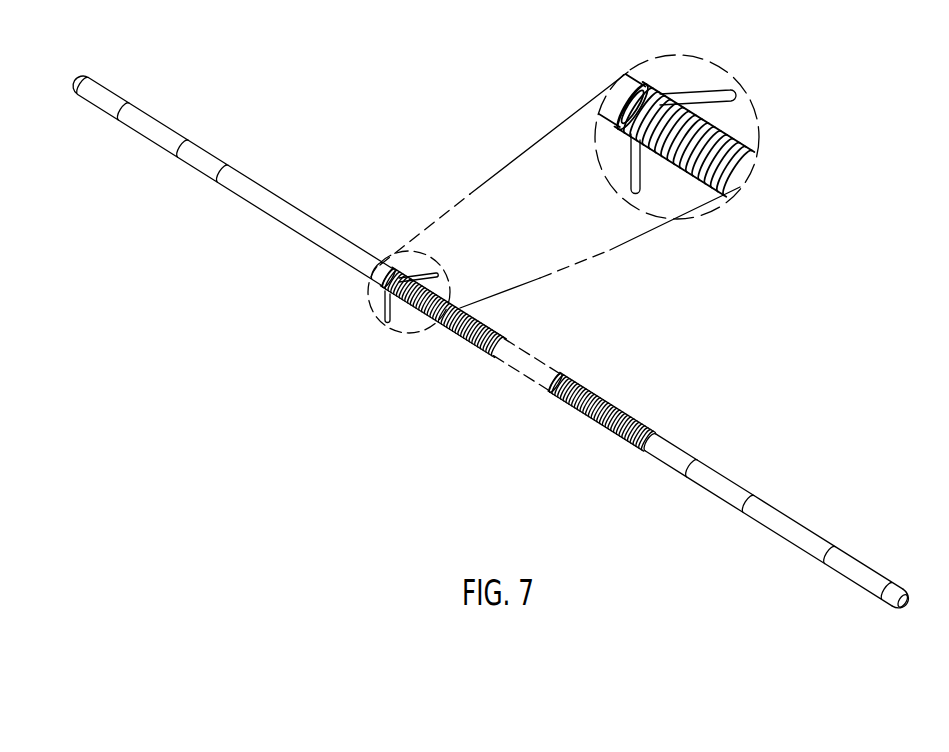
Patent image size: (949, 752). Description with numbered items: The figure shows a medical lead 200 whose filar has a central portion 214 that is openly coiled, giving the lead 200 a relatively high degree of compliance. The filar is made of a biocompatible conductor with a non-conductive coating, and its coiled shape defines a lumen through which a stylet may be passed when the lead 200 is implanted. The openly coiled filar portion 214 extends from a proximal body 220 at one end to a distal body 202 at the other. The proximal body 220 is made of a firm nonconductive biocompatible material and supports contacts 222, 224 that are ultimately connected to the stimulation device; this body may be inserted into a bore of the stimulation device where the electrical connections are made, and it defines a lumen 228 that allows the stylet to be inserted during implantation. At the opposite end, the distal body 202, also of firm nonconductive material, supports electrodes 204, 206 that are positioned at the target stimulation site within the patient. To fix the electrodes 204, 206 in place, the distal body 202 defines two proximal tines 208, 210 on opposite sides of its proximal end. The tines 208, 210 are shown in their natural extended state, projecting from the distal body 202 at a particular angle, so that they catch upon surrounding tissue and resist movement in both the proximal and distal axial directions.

The medical lead 200 is at (331, 380).
The distal body 202 is at (160, 121).
The electrode 204 is at (107, 95).
The electrode 206 is at (203, 154).
The proximal tine 208 is at (438, 276).
The proximal tine 210 is at (386, 318).
The openly coiled filar portion 214 is at (484, 356).
The proximal body 220 is at (680, 447).
The contact 222 is at (728, 478).
The contact 224 is at (858, 559).
The lumen 228 is at (908, 610).